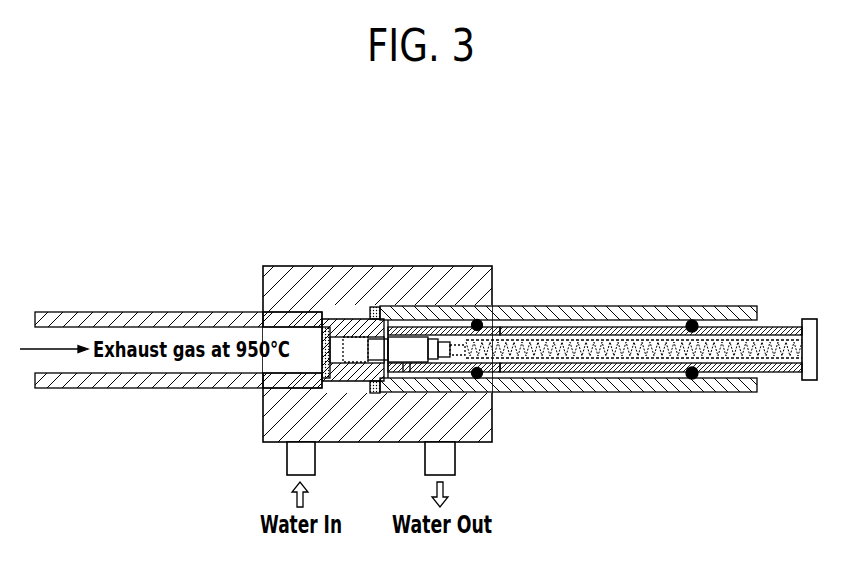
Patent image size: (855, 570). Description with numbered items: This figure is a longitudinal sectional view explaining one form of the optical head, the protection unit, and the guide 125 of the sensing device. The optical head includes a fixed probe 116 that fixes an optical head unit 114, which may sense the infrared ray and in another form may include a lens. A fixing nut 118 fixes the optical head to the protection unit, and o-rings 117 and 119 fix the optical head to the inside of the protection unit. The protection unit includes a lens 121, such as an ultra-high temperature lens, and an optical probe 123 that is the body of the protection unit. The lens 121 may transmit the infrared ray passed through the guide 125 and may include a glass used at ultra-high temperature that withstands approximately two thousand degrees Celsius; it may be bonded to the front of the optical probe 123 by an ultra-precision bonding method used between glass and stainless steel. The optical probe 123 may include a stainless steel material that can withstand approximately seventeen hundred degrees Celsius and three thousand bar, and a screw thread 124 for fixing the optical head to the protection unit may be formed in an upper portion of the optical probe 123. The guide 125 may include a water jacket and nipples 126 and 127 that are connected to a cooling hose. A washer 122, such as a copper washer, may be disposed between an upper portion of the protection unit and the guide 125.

The optical head unit 114 is at (332, 322).
The fixed probe 116 is at (634, 331).
The o-ring 117 is at (493, 306).
The fixing nut 118 is at (420, 336).
The o-ring 119 is at (692, 321).
The lens 121 is at (323, 342).
The washer 122 is at (375, 306).
The optical probe 123 is at (583, 313).
The screw thread 124 is at (392, 328).
The guide 125 is at (340, 273).
The nipple 126 is at (287, 458).
The nipple 127 is at (455, 458).